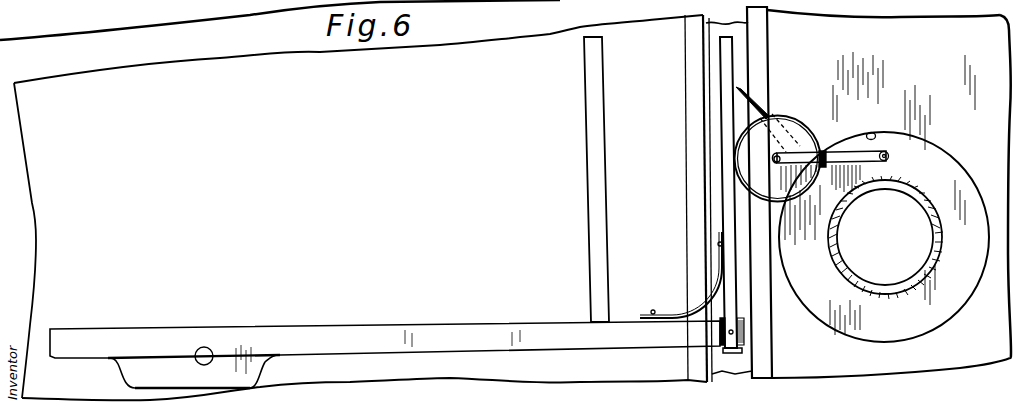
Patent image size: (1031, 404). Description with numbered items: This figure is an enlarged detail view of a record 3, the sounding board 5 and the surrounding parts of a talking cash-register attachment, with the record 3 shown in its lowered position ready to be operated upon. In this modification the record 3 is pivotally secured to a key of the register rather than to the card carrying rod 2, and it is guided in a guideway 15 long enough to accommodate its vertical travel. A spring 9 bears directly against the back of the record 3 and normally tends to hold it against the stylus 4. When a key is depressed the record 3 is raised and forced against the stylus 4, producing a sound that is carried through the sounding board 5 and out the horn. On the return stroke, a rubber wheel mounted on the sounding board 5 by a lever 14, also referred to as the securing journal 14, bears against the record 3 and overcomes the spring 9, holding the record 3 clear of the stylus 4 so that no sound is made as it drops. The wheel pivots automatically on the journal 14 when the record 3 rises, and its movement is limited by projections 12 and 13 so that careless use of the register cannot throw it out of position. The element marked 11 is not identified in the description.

The card carrying rod 2 is at (587, 166).
The record 3 is at (721, 106).
The stylus 4 is at (766, 108).
The sounding board 5 is at (884, 197).
The spring 9 is at (702, 306).
The arm 11 is at (843, 156).
The projection 12 is at (829, 168).
The projection 13 is at (876, 134).
The lever 14 is at (891, 156).
The guideway 15 is at (687, 49).